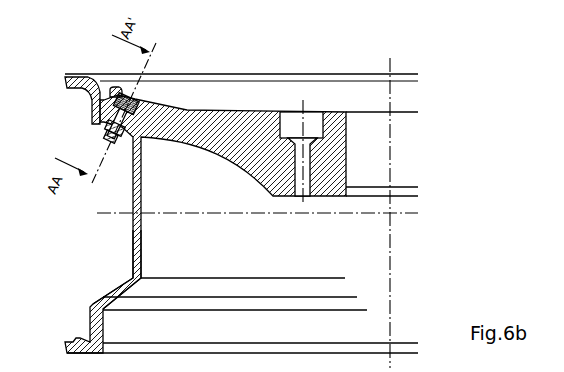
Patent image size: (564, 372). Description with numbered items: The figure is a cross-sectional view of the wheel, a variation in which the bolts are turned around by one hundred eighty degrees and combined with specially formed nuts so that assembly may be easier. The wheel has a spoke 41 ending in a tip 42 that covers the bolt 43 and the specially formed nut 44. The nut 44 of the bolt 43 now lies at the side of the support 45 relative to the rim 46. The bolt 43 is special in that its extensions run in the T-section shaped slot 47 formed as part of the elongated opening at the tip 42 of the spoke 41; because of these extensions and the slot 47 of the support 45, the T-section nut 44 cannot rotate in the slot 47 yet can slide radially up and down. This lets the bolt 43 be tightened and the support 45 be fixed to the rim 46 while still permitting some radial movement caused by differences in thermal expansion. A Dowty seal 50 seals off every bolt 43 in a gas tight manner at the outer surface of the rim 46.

The spoke 41 is at (193, 118).
The tip 42 is at (117, 89).
The bolt 43 is at (108, 137).
The nut 44 is at (116, 112).
The support 45 is at (270, 127).
The rim 46 is at (133, 232).
The T-section shaped slot 47 is at (110, 108).
The Dowty seal 50 is at (107, 130).